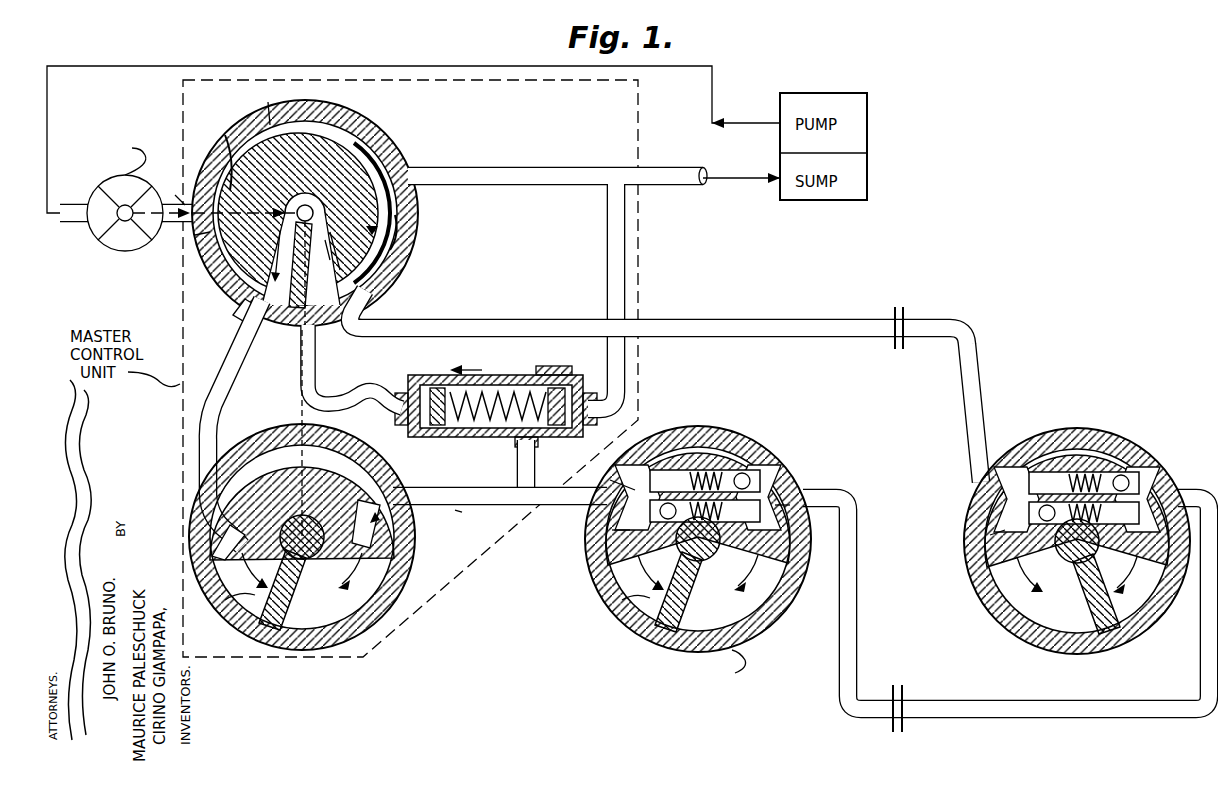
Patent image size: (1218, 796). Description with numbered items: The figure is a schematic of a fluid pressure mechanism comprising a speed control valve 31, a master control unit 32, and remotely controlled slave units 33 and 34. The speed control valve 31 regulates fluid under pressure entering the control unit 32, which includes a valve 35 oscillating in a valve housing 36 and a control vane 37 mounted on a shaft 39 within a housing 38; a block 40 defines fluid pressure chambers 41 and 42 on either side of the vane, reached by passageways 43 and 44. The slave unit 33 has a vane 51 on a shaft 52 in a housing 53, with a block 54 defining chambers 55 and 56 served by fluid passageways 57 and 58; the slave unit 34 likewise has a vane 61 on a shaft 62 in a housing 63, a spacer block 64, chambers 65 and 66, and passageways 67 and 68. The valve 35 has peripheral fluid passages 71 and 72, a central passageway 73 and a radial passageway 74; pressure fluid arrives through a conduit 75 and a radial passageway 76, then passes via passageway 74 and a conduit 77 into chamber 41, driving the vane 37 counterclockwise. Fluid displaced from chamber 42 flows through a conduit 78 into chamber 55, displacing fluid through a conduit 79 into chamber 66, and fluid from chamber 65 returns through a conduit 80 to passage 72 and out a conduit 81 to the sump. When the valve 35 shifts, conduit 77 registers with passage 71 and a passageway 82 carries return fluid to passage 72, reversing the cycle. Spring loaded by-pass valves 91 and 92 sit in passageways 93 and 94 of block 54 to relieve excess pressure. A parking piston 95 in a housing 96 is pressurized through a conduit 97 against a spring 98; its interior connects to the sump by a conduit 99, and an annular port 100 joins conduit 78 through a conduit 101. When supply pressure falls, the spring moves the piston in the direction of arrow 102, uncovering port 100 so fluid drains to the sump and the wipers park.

The speed control valve 31 is at (95, 195).
The master control unit 32 is at (178, 303).
The slave unit 33 is at (748, 428).
The slave unit 34 is at (1045, 430).
The valve 35 is at (380, 135).
The valve housing 36 is at (375, 125).
The control vane 37 is at (285, 612).
The housing 38 is at (228, 440).
The shaft 39 is at (315, 555).
The block 40 is at (280, 440).
The fluid pressure chamber 41 is at (240, 605).
The fluid pressure chamber 42 is at (375, 612).
The passageway 43 is at (240, 566).
The passageway 44 is at (405, 488).
The vane 51 is at (690, 610).
The shaft 52 is at (712, 552).
The housing 53 is at (600, 595).
The block 54 is at (782, 435).
The fluid pressure chamber 55 is at (612, 614).
The fluid pressure chamber 56 is at (760, 606).
The fluid passageway 57 is at (605, 520).
The fluid passageway 58 is at (795, 500).
The vane 61 is at (1095, 604).
The shaft 62 is at (1065, 556).
The housing 63 is at (970, 560).
The spacer block 64 is at (1095, 445).
The fluid pressure chamber 65 is at (1005, 587).
The fluid pressure chamber 66 is at (1140, 600).
The fluid passageway 67 is at (985, 500).
The fluid passageway 68 is at (1165, 488).
The peripheral fluid passage 71 is at (232, 140).
The peripheral fluid passage 72 is at (402, 232).
The central passageway 73 is at (312, 190).
The radial passageway 74 is at (245, 298).
The conduit 75 is at (175, 205).
The passageway 76 is at (195, 244).
The conduit 77 is at (232, 348).
The conduit 78 is at (462, 498).
The conduit 79 is at (858, 565).
The conduit 80 is at (505, 322).
The conduit 81 is at (468, 168).
The passageway 82 is at (268, 110).
The by-pass valve 91 is at (690, 468).
The by-pass valve 92 is at (765, 475).
The passageway 93 is at (615, 482).
The passageway 94 is at (812, 515).
The parking piston 95 is at (418, 382).
The housing 96 is at (500, 385).
The conduit 97 is at (352, 392).
The spring 98 is at (565, 385).
The conduit 99 is at (605, 228).
The annular port 100 is at (540, 385).
The conduit 101 is at (518, 464).
The arrow 102 is at (467, 358).